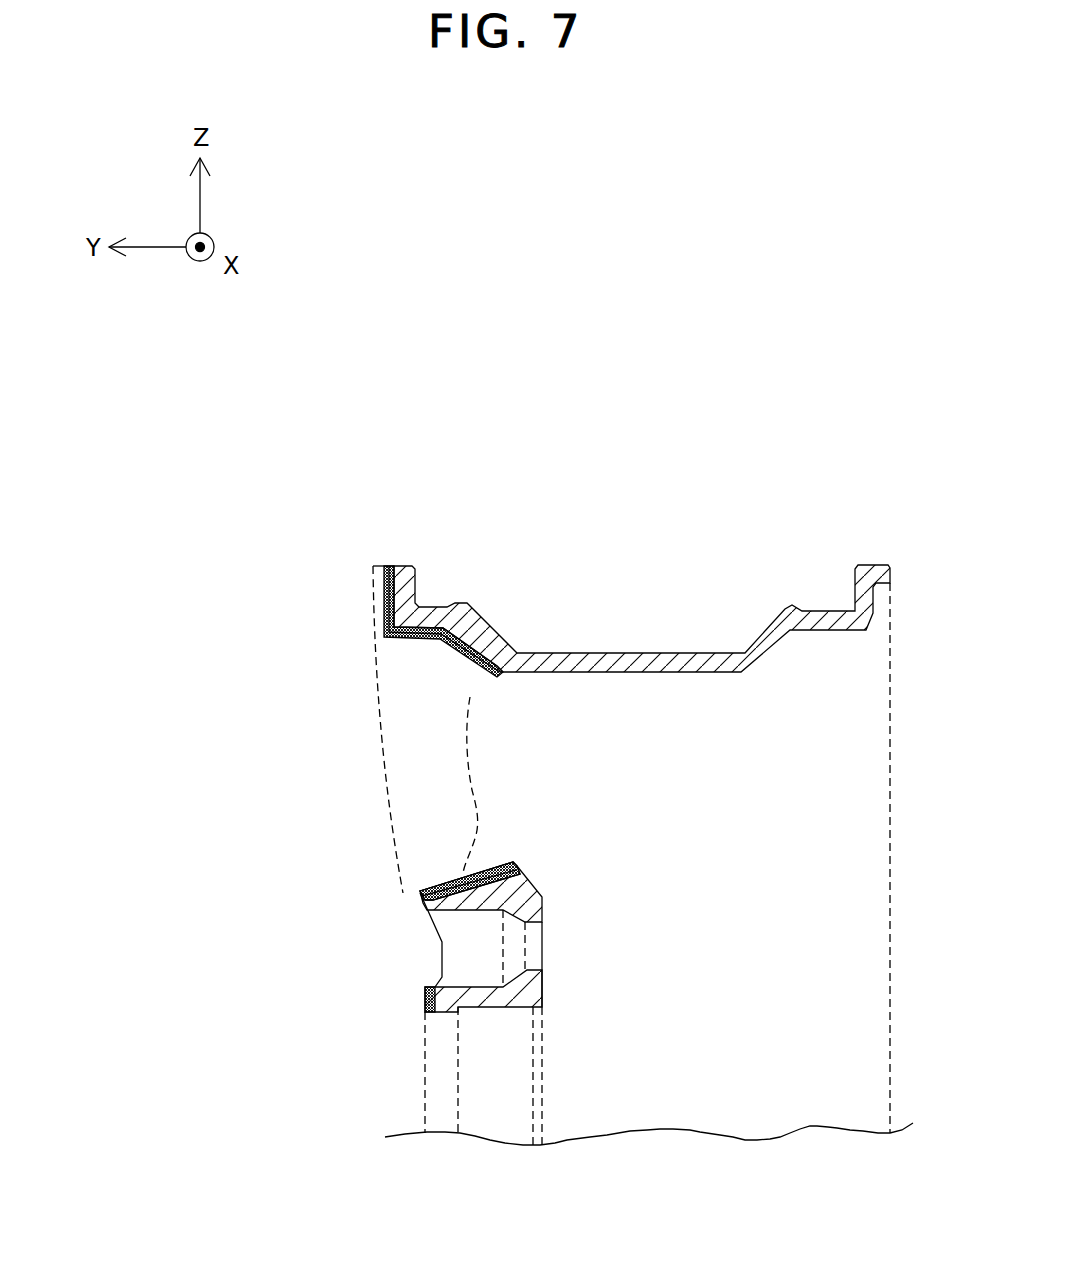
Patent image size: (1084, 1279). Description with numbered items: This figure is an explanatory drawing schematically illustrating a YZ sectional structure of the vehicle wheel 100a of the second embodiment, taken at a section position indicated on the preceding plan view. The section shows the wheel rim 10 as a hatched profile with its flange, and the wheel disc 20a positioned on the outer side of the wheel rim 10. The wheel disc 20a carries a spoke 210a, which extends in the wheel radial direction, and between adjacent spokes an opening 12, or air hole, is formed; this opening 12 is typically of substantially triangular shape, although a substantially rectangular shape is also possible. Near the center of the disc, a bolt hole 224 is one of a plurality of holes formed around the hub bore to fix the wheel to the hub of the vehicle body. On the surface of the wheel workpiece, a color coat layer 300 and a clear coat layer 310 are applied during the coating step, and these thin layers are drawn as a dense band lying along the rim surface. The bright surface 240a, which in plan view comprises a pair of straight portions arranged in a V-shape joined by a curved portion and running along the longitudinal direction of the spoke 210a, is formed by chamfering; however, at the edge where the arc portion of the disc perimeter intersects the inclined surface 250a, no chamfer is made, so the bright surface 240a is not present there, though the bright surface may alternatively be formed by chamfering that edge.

The wheel 100a is at (176, 497).
The wheel rim 10 is at (442, 592).
The wheel disc 20a is at (367, 627).
The opening 12 is at (478, 850).
The bolt hole 224 is at (483, 912).
The inclined surface 250a is at (465, 867).
The spoke 210a is at (415, 863).
The bright surface 240a is at (420, 891).
The color coat layer 300 is at (428, 883).
The clear coat layer 310 is at (458, 868).